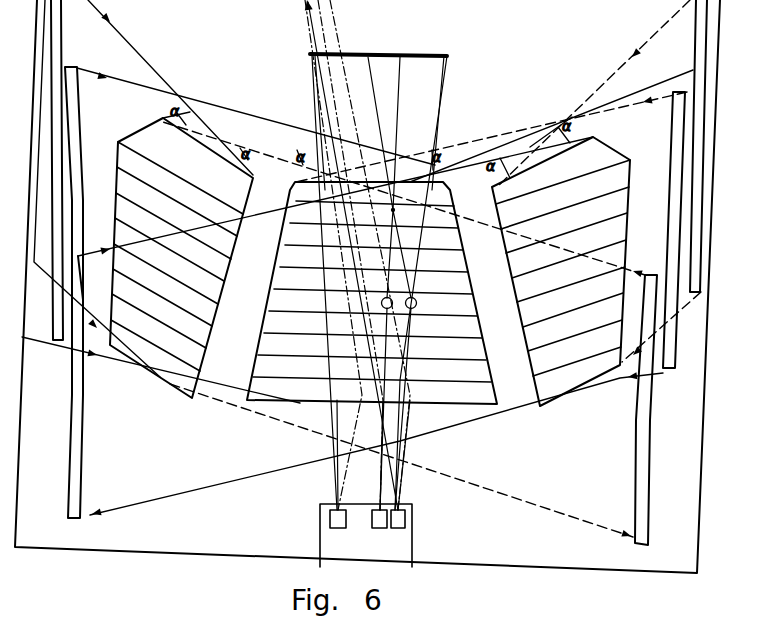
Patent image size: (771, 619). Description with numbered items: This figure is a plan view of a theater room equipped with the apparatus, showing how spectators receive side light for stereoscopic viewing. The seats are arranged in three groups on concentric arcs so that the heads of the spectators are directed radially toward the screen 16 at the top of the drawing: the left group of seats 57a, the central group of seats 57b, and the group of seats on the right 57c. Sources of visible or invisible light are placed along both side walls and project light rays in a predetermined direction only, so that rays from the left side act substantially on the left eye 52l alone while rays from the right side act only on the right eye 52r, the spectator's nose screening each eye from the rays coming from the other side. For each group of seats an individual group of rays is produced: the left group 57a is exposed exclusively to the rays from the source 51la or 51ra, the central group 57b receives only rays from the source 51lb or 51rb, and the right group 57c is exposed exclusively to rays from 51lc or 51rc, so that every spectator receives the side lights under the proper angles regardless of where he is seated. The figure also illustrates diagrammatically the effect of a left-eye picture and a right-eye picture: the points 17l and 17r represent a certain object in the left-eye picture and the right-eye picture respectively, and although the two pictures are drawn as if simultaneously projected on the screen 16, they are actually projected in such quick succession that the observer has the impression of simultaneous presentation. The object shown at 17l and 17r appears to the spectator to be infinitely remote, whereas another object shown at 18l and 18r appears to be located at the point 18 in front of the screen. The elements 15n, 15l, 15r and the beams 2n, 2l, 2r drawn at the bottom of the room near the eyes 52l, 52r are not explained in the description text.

The source of light 51la is at (62, 27).
The source of light 51lb is at (74, 171).
The source of light 51lc is at (83, 450).
The source of light 51ra is at (638, 455).
The source of light 51rb is at (668, 194).
The source of light 51rc is at (698, 48).
The left group of seats 57a is at (181, 258).
The central group of seats 57b is at (372, 293).
The right group of seats 57c is at (561, 271).
The screen 16 is at (448, 54).
The point 17l is at (314, 48).
The point 17r is at (343, 50).
The point 18l is at (402, 60).
The point 18r is at (370, 60).
The point 18 is at (395, 211).
The left eye 52l is at (377, 317).
The right eye 52r is at (420, 317).
The central photoreceiver 15n is at (334, 533).
The left photoreceiver 15l is at (375, 533).
The right photoreceiver 15r is at (399, 531).
The central beam 2n is at (330, 489).
The left beam 2l is at (375, 490).
The right beam 2r is at (403, 498).